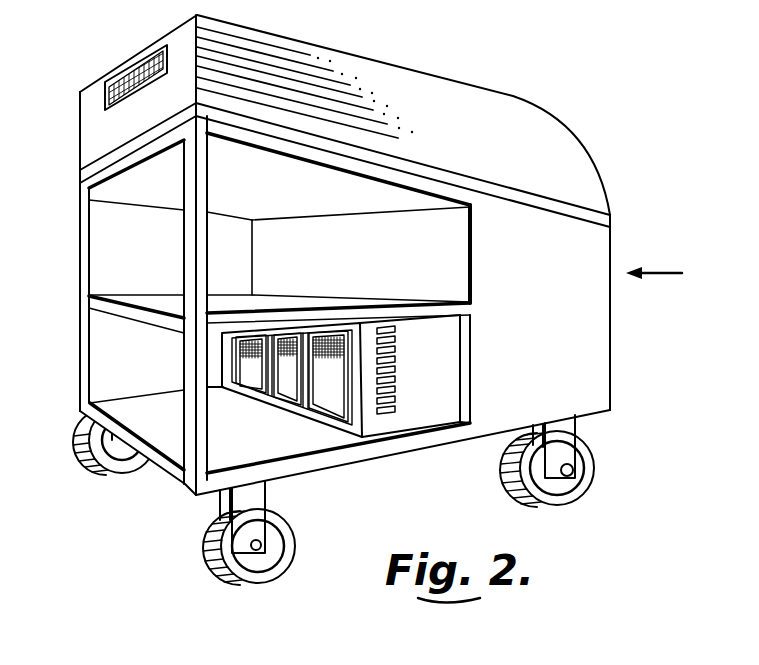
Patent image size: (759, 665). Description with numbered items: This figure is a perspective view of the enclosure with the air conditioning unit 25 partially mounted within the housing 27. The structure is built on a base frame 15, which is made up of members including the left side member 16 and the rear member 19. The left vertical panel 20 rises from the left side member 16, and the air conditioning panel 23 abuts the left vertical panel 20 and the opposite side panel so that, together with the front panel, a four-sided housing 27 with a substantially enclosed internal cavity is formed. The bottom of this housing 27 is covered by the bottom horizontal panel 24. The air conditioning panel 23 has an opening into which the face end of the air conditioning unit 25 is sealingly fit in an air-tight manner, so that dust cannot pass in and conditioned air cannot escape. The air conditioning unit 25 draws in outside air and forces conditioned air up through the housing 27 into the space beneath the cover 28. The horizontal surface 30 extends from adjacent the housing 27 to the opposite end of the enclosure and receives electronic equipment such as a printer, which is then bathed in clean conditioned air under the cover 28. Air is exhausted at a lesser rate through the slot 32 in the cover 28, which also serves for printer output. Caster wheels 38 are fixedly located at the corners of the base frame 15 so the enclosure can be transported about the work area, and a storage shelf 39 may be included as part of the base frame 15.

The base frame 15 is at (373, 527).
The left side member 16 is at (372, 452).
The rear member 19 is at (178, 478).
The left vertical panel 20 is at (587, 373).
The air conditioning panel 23 is at (355, 268).
The bottom horizontal panel 24 is at (606, 423).
The air conditioning unit 25 is at (427, 398).
The housing 27 is at (670, 275).
The cover 28 is at (552, 135).
The horizontal surface 30 is at (117, 188).
The slot 32 is at (143, 54).
The caster wheels 38 is at (563, 490).
The storage shelf 39 is at (137, 302).